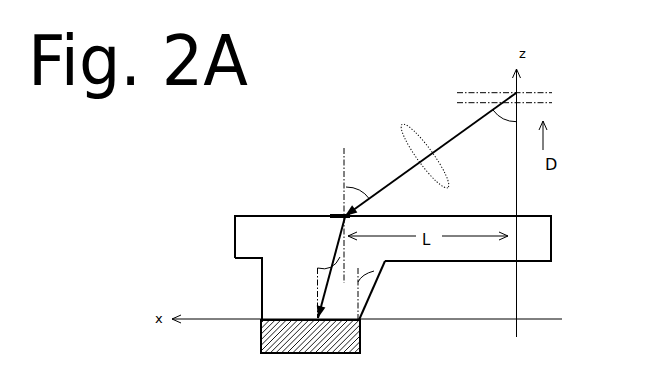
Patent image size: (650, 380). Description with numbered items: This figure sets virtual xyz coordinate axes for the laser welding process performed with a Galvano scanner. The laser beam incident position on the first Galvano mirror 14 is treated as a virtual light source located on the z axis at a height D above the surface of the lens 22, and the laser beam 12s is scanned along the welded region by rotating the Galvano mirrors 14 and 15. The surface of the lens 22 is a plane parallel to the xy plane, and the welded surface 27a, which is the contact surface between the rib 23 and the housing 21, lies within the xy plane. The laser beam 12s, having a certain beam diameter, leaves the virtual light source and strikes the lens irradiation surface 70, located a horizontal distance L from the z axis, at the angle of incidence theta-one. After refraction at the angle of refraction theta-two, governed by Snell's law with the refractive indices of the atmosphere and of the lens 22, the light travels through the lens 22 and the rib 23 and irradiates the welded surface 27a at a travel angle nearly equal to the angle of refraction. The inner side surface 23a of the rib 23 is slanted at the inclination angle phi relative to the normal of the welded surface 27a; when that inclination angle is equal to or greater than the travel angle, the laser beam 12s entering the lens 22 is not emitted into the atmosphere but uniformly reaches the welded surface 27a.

The laser beam 12s is at (438, 133).
The first Galvano mirror 14 is at (553, 90).
The Galvano mirror 15 is at (556, 106).
The lens irradiation surface 70 is at (333, 209).
The lens 22 is at (245, 244).
The rib 23 is at (270, 275).
The inner side surface 23a is at (388, 280).
The welded surface 27a is at (281, 313).
The housing 21 is at (280, 342).